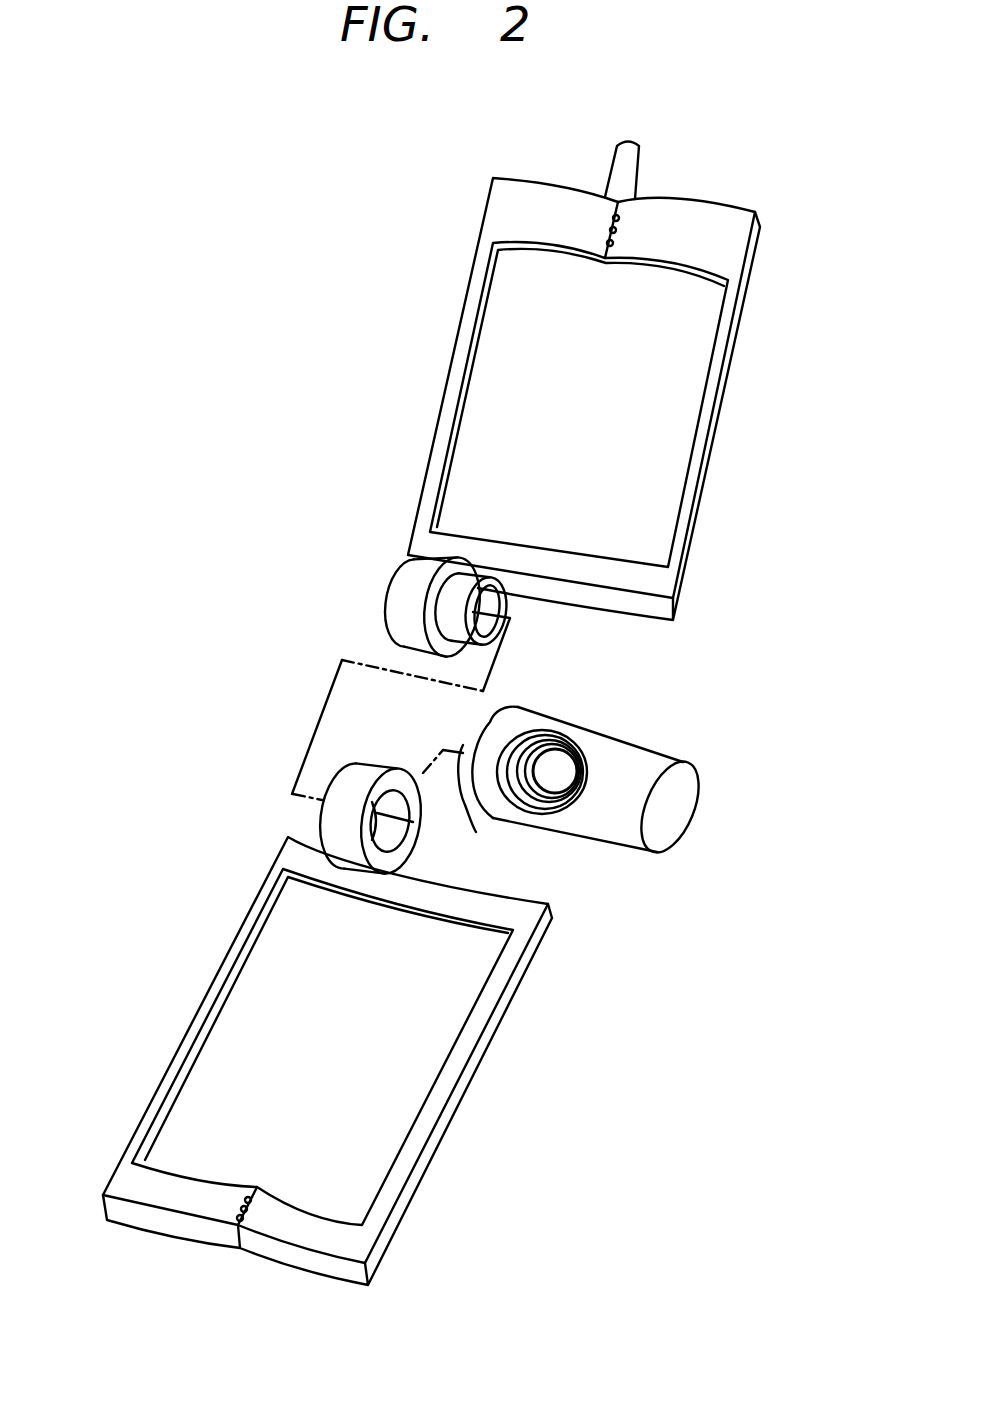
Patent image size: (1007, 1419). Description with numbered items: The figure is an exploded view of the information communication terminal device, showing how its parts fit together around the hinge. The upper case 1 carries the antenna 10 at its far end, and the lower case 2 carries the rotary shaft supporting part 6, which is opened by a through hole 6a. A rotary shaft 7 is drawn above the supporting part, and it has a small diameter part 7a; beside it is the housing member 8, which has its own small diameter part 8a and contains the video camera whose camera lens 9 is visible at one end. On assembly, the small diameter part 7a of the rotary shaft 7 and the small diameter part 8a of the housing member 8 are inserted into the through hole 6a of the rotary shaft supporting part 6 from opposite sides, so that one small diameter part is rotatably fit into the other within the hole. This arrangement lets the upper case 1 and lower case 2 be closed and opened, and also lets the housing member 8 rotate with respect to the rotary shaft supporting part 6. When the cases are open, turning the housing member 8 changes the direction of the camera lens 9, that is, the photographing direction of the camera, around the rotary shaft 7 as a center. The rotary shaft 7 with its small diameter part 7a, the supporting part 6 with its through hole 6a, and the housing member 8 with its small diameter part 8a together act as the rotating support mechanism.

The upper case 1 is at (713, 427).
The lower case 2 is at (455, 1112).
The rotary shaft supporting part 6 is at (327, 820).
The through hole 6a is at (390, 840).
The rotary shaft 7 is at (395, 610).
The small diameter part 7a is at (462, 643).
The housing member 8 is at (633, 773).
The small diameter part 8a is at (460, 785).
The camera lens 9 is at (567, 770).
The antenna 10 is at (630, 164).